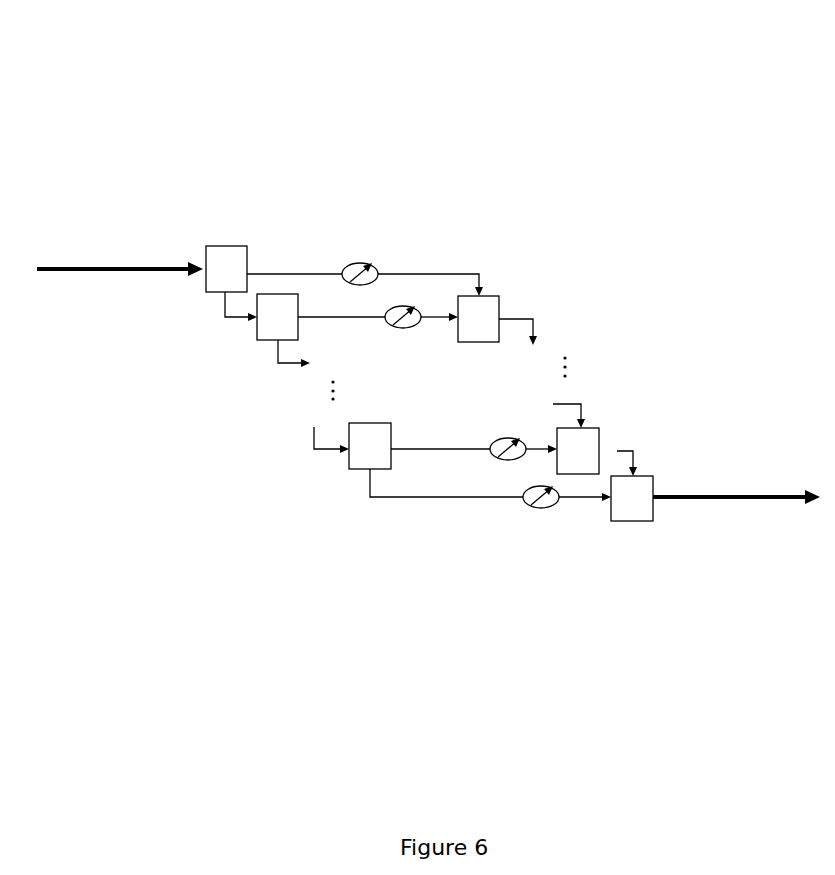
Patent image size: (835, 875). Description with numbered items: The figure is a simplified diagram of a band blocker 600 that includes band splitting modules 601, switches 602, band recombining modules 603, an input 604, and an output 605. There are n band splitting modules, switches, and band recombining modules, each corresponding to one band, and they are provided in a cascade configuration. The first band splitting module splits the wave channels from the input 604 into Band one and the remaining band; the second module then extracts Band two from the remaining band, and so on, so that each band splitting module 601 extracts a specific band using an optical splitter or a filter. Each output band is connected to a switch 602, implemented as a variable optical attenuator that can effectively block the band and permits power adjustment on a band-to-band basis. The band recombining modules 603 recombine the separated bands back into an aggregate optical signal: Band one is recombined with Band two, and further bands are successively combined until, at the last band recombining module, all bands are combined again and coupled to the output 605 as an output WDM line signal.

The band blocker 600 is at (613, 67).
The band splitting modules 601 is at (220, 246).
The switches 602 is at (368, 263).
The band recombining modules 603 is at (483, 298).
The input 604 is at (70, 267).
The output 605 is at (712, 497).